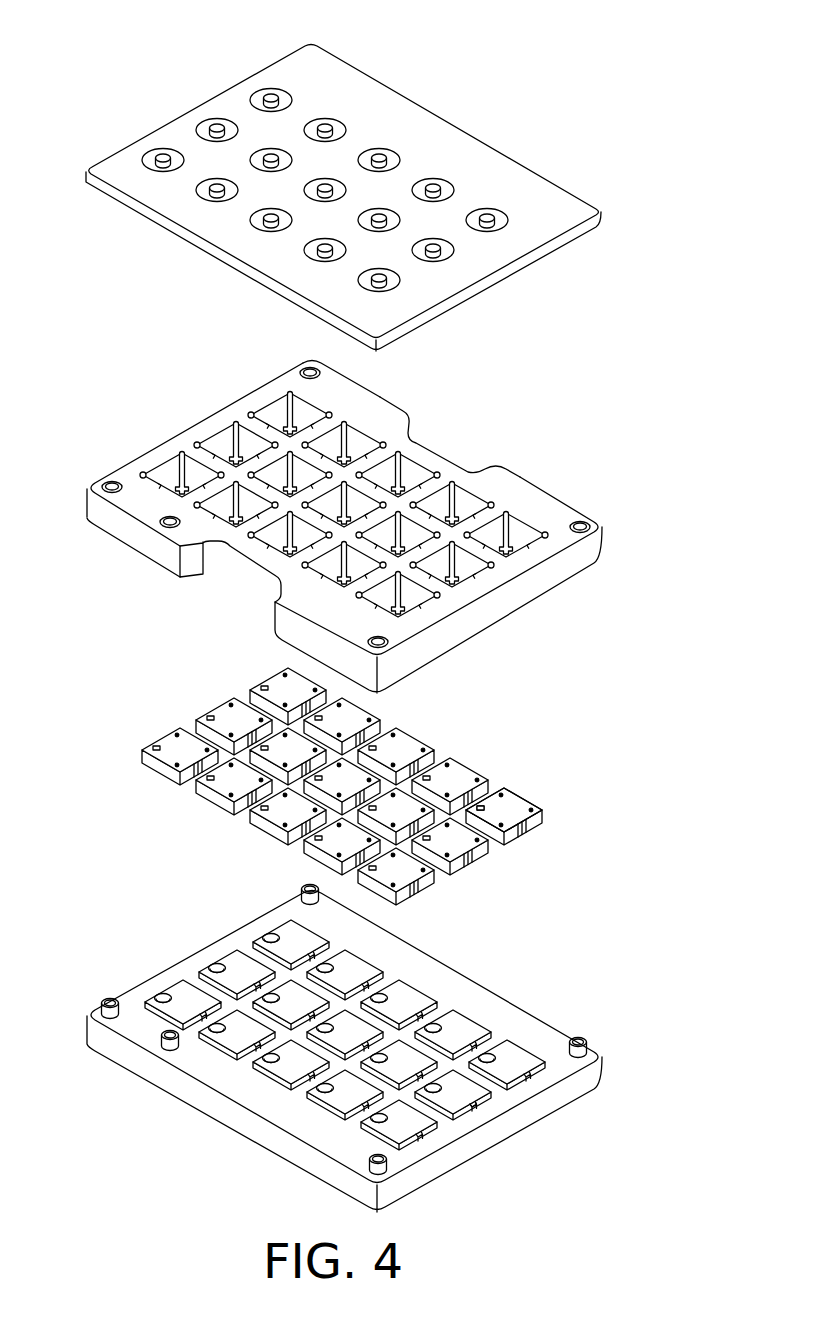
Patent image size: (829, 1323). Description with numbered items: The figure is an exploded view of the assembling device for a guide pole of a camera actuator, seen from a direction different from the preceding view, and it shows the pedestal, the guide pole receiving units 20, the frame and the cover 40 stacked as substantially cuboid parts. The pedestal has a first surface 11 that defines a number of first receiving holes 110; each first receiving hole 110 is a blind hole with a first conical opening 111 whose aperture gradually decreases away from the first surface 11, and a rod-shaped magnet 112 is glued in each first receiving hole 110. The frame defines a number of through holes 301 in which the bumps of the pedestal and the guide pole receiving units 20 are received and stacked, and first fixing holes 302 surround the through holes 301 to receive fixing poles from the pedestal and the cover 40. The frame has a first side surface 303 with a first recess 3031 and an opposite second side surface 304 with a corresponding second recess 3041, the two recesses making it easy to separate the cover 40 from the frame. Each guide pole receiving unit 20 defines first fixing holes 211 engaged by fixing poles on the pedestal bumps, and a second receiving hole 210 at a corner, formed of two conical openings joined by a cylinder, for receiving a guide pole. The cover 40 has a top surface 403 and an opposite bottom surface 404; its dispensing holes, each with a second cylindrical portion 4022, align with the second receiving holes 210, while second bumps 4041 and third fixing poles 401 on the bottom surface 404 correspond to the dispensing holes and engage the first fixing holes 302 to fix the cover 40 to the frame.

The first surface 11 is at (374, 195).
The first receiving hole 110 is at (564, 159).
The first conical opening 111 is at (473, 213).
The magnet 112 is at (497, 220).
The first side surface 303 is at (347, 527).
The first recess 3031 is at (445, 453).
The first fixing hole 302 is at (581, 523).
The second side surface 304 is at (125, 533).
The second recess 3041 is at (250, 573).
The through hole 301 is at (521, 545).
The guide pole receiving unit 20 is at (536, 798).
The second receiving hole 210 is at (485, 808).
The first fixing hole 211 is at (518, 805).
The cover 40 is at (348, 1049).
The third fixing pole 401 is at (585, 1044).
The bottom surface 404 is at (130, 995).
The top surface 403 is at (131, 1072).
The second bump 4041 is at (535, 1123).
The second cylindrical portion 4022 is at (464, 1092).